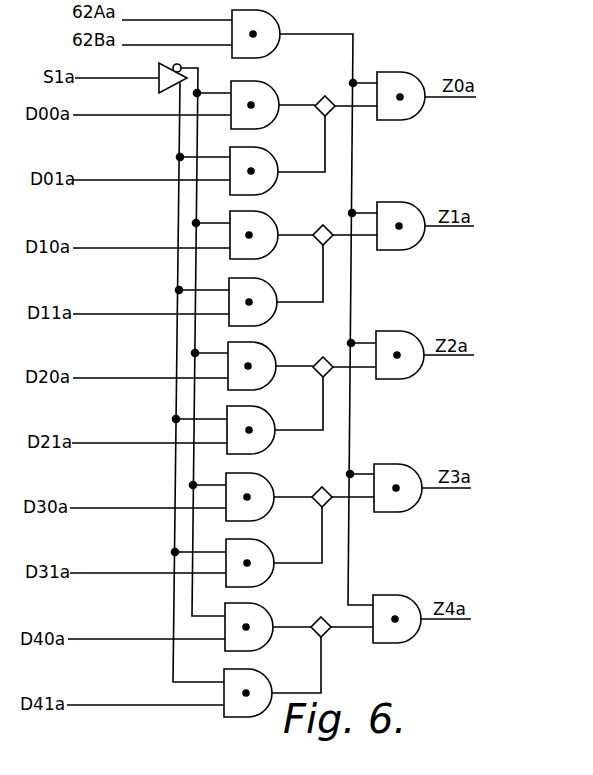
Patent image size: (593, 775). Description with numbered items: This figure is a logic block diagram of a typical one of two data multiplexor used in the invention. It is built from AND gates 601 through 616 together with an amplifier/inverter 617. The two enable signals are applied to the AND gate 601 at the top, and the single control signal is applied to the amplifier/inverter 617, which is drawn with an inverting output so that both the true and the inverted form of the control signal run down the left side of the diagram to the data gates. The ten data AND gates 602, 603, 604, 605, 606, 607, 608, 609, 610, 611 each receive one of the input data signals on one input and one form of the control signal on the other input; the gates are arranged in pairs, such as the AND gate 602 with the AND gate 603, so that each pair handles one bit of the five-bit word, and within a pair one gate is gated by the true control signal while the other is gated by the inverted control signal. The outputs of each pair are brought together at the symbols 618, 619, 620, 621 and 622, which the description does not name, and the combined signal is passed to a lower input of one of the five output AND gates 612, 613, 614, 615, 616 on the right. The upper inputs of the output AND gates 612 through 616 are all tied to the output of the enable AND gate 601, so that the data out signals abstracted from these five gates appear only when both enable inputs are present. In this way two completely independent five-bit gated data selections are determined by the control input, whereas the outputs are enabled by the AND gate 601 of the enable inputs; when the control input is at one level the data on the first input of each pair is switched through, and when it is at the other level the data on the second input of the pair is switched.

The AND gate 601 is at (265, 16).
The AND gate 602 is at (250, 88).
The AND gate 603 is at (250, 154).
The AND gate 604 is at (250, 219).
The AND gate 605 is at (249, 285).
The AND gate 606 is at (248, 350).
The AND gate 607 is at (248, 414).
The AND gate 608 is at (247, 481).
The AND gate 609 is at (247, 547).
The AND gate 610 is at (252, 610).
The AND gate 611 is at (248, 677).
The AND gate 612 is at (387, 78).
The AND gate 613 is at (387, 208).
The AND gate 614 is at (387, 337).
The AND gate 615 is at (385, 470).
The AND gate 616 is at (383, 601).
The amplifier/inverter 617 is at (159, 65).
The OR circuit 618 is at (323, 96).
The OR circuit 619 is at (322, 225).
The OR circuit 620 is at (323, 357).
The OR circuit 621 is at (322, 487).
The OR circuit 622 is at (320, 617).